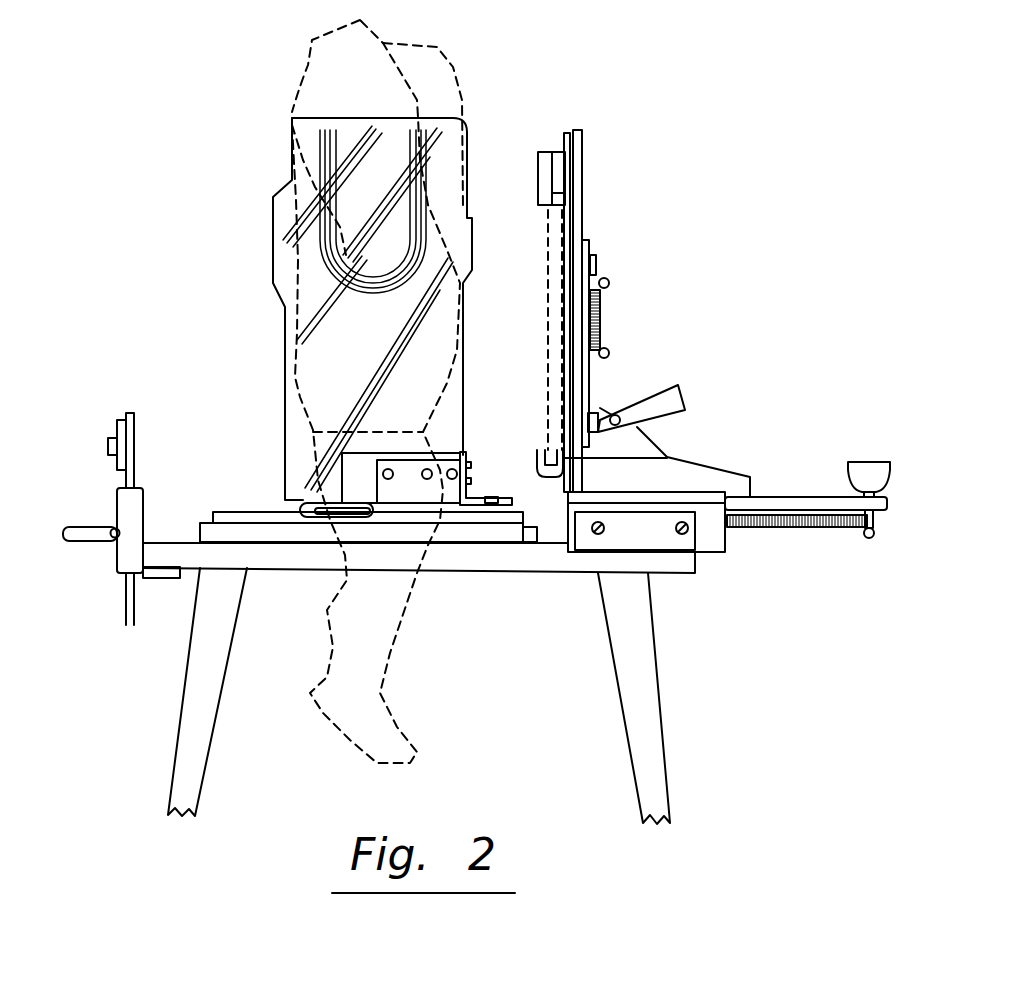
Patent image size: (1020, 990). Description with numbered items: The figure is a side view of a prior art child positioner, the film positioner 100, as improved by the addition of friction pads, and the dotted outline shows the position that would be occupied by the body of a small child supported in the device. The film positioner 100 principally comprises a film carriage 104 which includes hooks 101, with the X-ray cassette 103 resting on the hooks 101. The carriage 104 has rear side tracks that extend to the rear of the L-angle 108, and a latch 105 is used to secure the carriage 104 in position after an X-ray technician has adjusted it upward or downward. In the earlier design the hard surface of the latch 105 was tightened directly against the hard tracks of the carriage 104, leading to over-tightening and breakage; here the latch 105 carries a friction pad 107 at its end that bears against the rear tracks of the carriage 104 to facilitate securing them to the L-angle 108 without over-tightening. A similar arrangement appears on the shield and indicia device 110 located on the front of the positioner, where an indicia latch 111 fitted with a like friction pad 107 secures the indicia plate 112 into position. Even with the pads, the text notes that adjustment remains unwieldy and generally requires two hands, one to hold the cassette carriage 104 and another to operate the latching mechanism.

The film positioner 100 is at (682, 130).
The hooks 101 is at (667, 456).
The X-ray cassette 103 is at (600, 268).
The film carriage 104 is at (602, 388).
The latch 105 is at (683, 397).
The friction pad 107 is at (616, 404).
The L-angle 108 is at (583, 226).
The shield and indicia device 110 is at (112, 410).
The indicia latch 111 is at (93, 530).
The indicia plate 112 is at (137, 448).